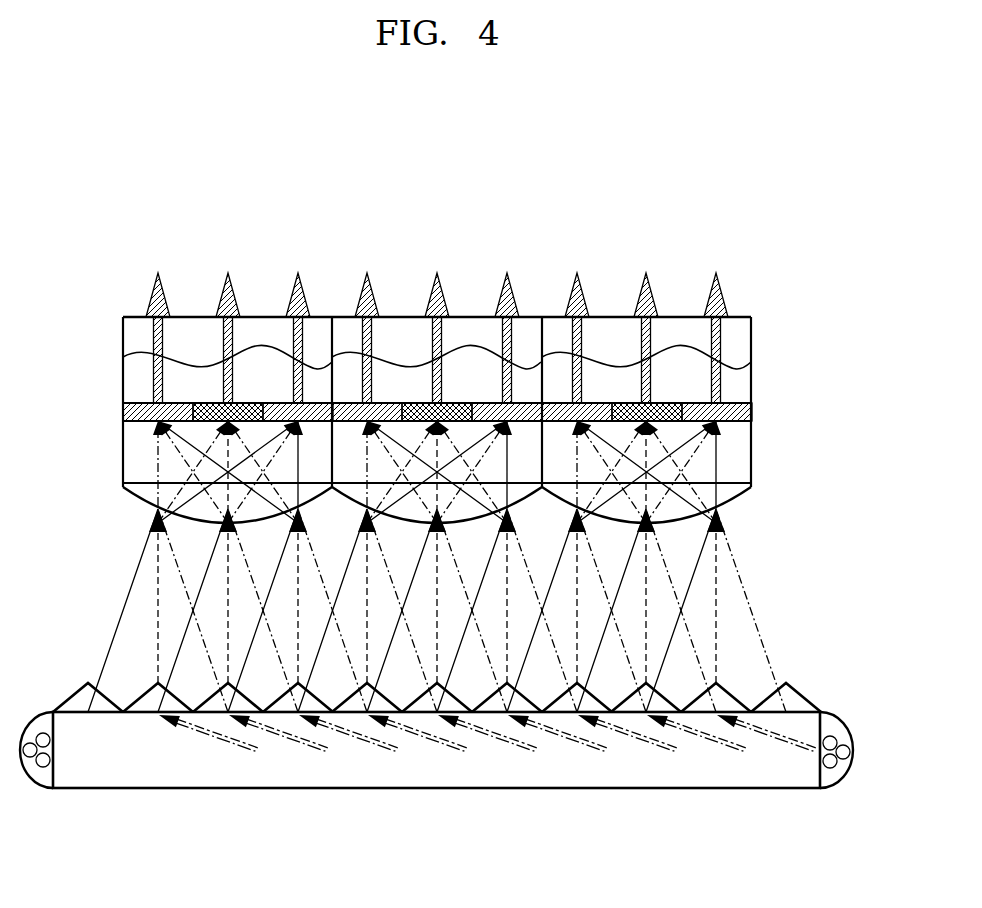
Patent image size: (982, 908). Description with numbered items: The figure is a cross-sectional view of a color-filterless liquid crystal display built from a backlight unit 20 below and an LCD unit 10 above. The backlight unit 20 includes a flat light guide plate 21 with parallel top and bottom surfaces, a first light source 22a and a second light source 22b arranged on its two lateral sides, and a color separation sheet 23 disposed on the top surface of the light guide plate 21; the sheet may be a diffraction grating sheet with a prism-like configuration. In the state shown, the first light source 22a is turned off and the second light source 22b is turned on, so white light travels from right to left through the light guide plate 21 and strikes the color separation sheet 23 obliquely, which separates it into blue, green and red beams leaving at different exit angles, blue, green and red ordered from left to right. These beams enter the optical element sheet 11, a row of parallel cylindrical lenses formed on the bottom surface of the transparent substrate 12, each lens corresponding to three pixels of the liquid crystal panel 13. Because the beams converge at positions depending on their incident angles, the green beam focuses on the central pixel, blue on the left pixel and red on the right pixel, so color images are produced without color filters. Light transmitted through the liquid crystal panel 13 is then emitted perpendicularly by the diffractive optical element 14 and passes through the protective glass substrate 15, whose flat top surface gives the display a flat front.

The LCD unit 10 is at (816, 335).
The optical element sheet 11 is at (730, 500).
The transparent substrate 12 is at (746, 452).
The liquid crystal panel 13 is at (748, 415).
The diffractive optical element 14 is at (744, 388).
The glass substrate 15 is at (744, 344).
The backlight unit 20 is at (799, 683).
The light guide plate 21 is at (442, 790).
The first light source 22a is at (37, 778).
The second light source 22b is at (831, 766).
The color separation sheet 23 is at (805, 705).